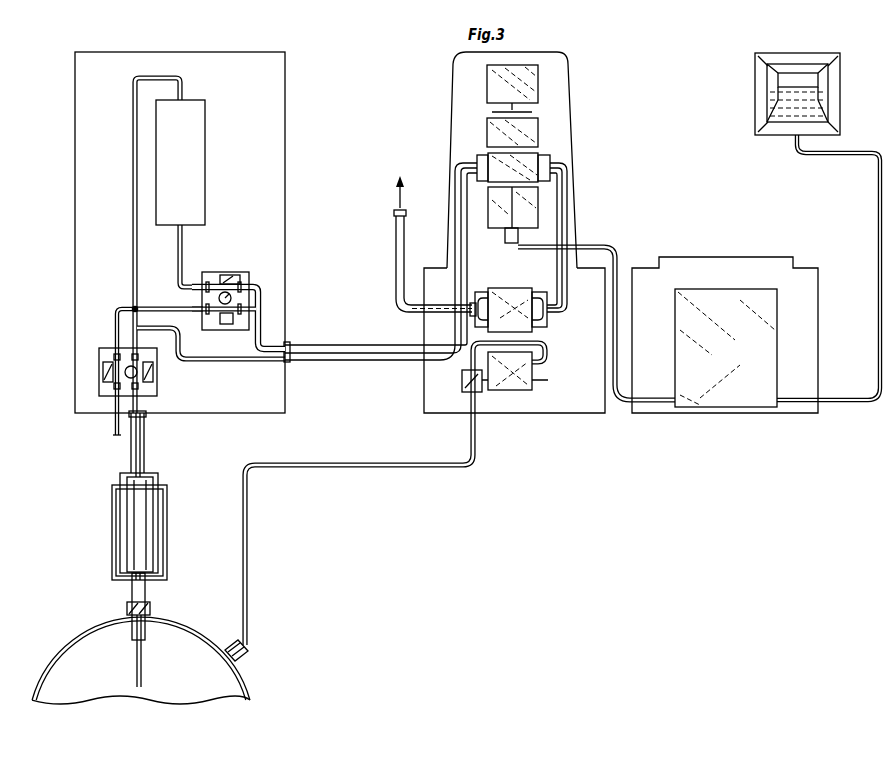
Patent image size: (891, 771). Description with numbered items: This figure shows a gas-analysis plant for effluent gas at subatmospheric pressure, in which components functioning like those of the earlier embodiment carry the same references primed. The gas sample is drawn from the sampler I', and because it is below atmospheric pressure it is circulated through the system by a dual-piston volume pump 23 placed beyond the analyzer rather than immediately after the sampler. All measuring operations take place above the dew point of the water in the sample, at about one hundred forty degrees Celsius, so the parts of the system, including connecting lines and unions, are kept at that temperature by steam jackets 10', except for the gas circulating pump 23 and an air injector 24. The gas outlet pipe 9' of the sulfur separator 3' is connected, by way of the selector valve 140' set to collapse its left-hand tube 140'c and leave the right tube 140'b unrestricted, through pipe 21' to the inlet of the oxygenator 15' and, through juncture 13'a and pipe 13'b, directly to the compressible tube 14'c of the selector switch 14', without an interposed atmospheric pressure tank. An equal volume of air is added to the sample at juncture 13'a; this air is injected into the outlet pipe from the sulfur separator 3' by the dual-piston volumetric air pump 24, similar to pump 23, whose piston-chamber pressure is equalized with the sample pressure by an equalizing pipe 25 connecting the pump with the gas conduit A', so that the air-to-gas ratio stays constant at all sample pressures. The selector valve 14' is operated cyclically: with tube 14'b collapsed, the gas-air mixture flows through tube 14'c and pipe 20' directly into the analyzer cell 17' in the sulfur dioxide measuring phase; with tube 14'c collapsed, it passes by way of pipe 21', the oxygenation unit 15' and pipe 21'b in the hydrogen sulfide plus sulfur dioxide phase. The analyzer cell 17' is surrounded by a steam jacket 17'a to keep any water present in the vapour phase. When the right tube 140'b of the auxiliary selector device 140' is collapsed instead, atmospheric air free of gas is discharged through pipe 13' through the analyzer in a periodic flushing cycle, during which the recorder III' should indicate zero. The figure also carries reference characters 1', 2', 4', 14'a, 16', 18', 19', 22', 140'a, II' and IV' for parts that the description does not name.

The injection needle 1' is at (158, 630).
The needle holder 2' is at (115, 593).
The sulfur separator 3' is at (160, 523).
The syringe housing 4' is at (156, 530).
The gas outlet pipe 9' is at (150, 445).
The steam jackets 10' is at (371, 324).
The pipe 13' is at (110, 368).
The juncture 13'a is at (115, 294).
The pipe 13'b is at (169, 282).
The selector valve 14' is at (238, 289).
The valve inlet conduit 14'a is at (177, 287).
The compressible tube 14'b is at (222, 257).
The compressible tube 14'c is at (220, 333).
The oxygenator 15' is at (204, 162).
The control unit 16' is at (480, 86).
The analyzer cell 17' is at (553, 167).
The steam jacket 17'a is at (553, 224).
The pump 18' is at (553, 215).
The drive unit 19' is at (552, 128).
The pipe 20' is at (380, 272).
The pipe 21' is at (138, 193).
The pipe 21'b is at (189, 235).
The collecting reservoir 22' is at (725, 353).
The dual-piston volume pump 23 is at (503, 297).
The dual-piston volumetric air pump 24 is at (511, 392).
The equalizing pipe 25 is at (385, 502).
The selector valve 140' is at (98, 372).
The valve 140'a is at (104, 355).
The right tube 140'b is at (172, 371).
The left-hand compressible tube 140'c is at (74, 369).
The sampler I' is at (131, 567).
The gas supply unit II' is at (157, 232).
The recorder III' is at (514, 232).
The collecting vessel IV' is at (813, 94).
The gas conduit A' is at (139, 660).